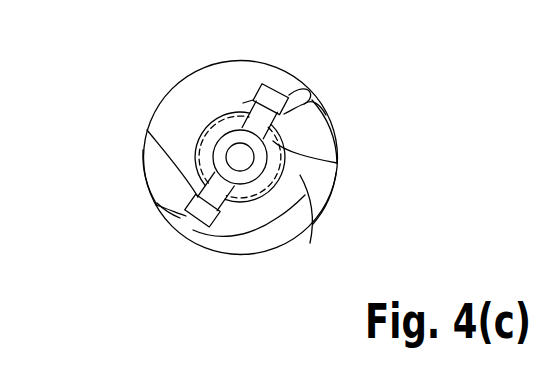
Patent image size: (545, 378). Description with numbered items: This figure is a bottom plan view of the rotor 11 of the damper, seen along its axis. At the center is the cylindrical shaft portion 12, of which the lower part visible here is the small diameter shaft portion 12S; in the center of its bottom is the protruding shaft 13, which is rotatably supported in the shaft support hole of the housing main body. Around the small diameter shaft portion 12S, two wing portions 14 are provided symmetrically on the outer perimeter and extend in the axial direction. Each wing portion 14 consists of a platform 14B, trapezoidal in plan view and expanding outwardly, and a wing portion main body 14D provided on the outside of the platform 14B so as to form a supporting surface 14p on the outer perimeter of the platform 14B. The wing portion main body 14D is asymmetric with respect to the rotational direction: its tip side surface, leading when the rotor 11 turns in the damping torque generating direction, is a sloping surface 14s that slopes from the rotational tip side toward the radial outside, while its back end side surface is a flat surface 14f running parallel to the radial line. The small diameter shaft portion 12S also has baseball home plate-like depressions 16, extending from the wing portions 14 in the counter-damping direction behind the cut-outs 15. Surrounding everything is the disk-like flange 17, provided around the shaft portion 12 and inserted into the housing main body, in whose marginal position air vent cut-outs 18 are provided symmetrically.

The rotor 11 is at (329, 224).
The shaft portion 12 is at (243, 207).
The small diameter shaft portion 12S is at (256, 205).
The protruding shaft 13 is at (305, 195).
The wing portion 14 is at (248, 102).
The platform 14B is at (248, 98).
The wing portion main body 14D is at (286, 88).
The flat surface 14f is at (304, 97).
The supporting surface 14p is at (340, 136).
The sloping surface 14s is at (263, 85).
The cut-out 15 is at (544, 12).
The depression 16 is at (196, 147).
The disk-like flange 17 is at (313, 224).
The air vent cut-out 18 is at (313, 109).